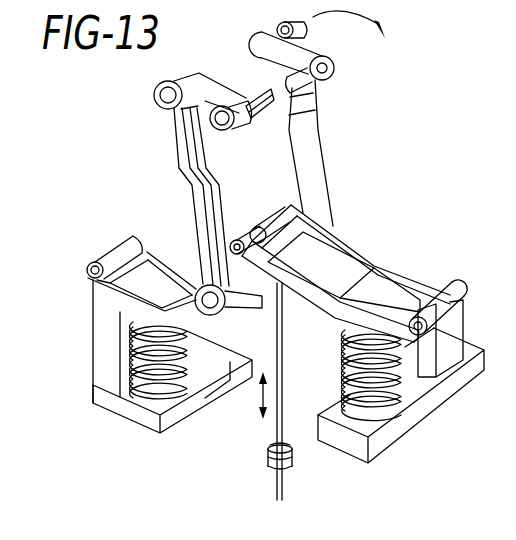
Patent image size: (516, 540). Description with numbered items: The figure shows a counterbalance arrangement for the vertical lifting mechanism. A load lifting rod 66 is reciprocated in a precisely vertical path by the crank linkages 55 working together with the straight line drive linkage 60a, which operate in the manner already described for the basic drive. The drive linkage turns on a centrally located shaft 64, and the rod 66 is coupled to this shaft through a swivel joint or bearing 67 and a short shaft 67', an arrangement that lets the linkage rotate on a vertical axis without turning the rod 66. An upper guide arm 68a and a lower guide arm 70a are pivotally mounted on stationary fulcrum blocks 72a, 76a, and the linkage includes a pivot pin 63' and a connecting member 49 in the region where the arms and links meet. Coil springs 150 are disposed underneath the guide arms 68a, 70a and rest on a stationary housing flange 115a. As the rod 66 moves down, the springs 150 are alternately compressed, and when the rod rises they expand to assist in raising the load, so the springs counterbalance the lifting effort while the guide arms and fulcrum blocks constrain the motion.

The connecting rod 49 is at (253, 100).
The crank linkage 55 is at (173, 155).
The straight line drive linkage 60a is at (280, 198).
The pivot pin 63' is at (258, 200).
The shaft 64 is at (255, 295).
The load lifting rod 66 is at (285, 493).
The swivel joint 67 is at (245, 486).
The short shaft 67' is at (243, 462).
The upper guide arm 68a is at (358, 256).
The lower guide arm 70a is at (173, 247).
The stationary fulcrum block 72a is at (454, 325).
The stationary fulcrum block 76a is at (103, 365).
The stationary housing flange 115a is at (423, 408).
The coil spring 150 is at (142, 392).